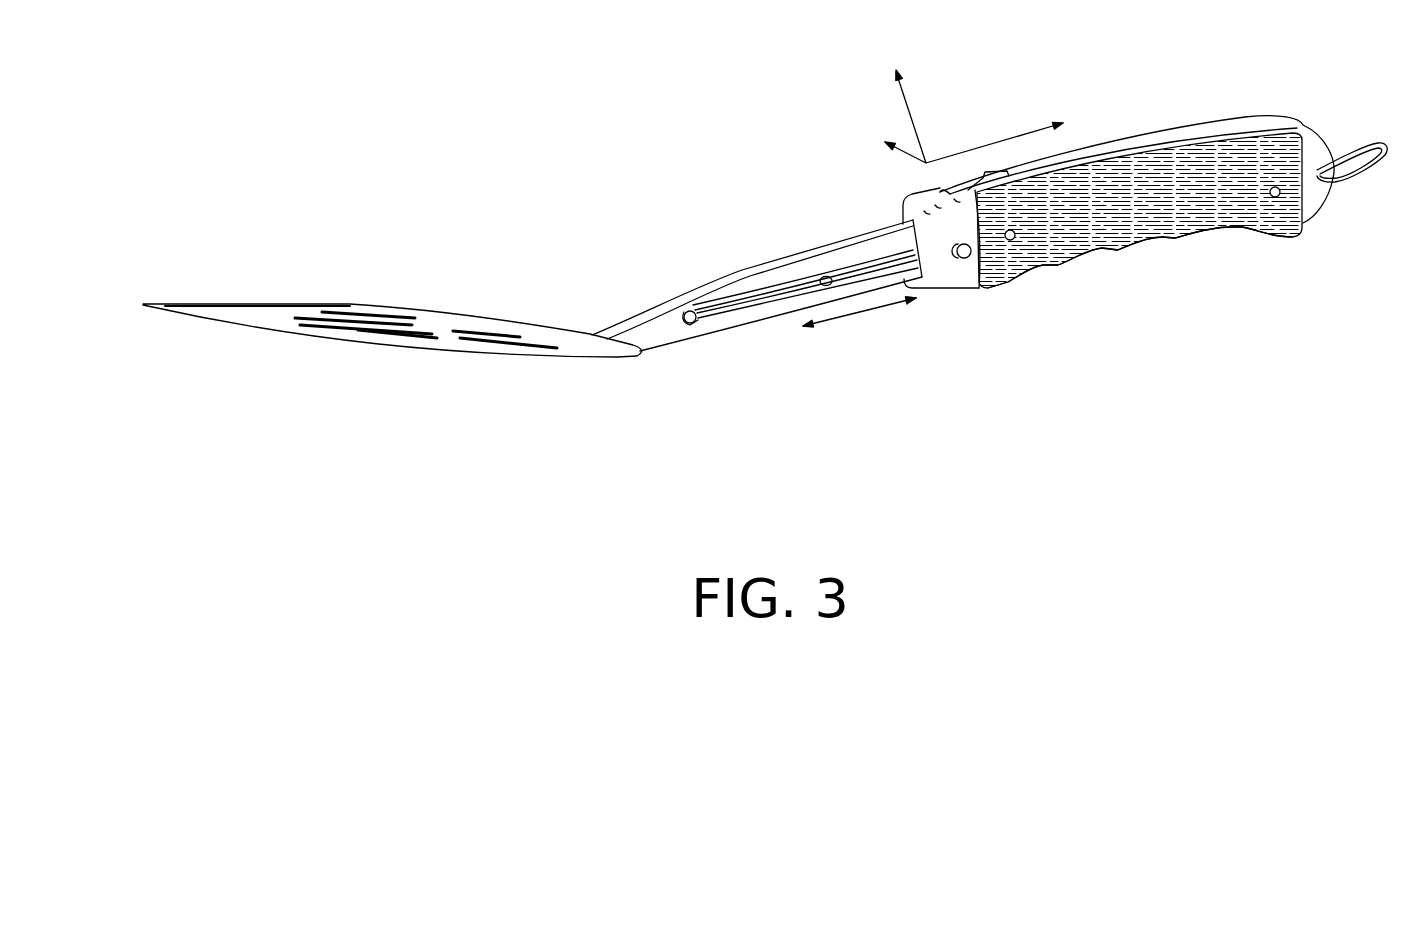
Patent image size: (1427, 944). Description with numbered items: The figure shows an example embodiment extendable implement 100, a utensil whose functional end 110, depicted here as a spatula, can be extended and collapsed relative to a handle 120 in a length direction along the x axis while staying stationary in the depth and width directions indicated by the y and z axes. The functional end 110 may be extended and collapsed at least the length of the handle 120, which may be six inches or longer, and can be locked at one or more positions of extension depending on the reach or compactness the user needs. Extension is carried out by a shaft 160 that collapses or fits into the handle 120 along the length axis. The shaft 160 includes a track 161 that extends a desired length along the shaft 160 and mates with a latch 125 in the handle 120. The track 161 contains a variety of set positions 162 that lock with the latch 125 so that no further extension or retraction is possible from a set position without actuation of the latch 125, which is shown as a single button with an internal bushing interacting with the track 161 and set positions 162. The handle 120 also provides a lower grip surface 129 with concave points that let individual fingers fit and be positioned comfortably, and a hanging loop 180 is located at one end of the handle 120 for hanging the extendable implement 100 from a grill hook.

The extendable implement 100 is at (266, 434).
The functional end 110 is at (290, 320).
The handle 120 is at (1172, 180).
The latch 125 is at (964, 258).
The lower grip surface 129 is at (1138, 248).
The shaft 160 is at (763, 314).
The track 161 is at (785, 292).
The set positions 162 is at (688, 310).
The hanging loop 180 is at (1373, 163).